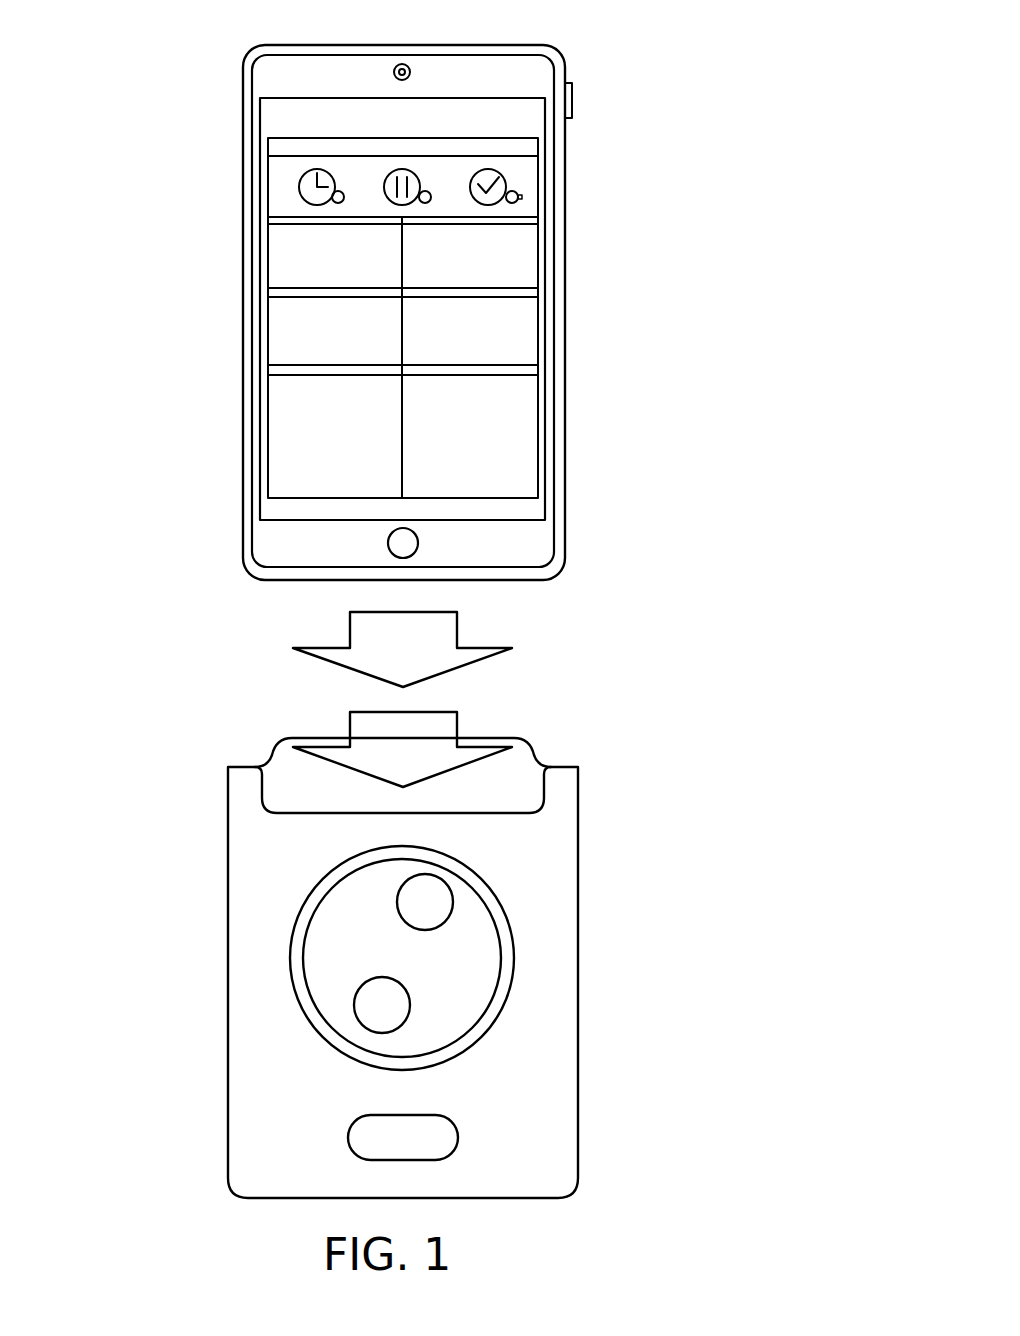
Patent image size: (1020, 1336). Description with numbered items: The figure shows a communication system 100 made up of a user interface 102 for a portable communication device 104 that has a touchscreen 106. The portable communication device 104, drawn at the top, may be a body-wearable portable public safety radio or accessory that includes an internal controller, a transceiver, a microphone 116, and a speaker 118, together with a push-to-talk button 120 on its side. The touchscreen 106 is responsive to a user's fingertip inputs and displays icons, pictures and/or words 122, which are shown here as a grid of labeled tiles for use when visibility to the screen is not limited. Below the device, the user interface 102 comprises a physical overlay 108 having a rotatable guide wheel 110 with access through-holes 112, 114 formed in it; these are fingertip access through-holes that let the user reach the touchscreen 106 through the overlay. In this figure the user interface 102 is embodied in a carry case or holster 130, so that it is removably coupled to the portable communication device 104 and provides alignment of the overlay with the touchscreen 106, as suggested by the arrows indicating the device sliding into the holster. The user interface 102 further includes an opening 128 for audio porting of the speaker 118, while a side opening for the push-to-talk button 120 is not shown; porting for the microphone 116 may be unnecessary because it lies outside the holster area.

The communication system 100 is at (110, 28).
The user interface 102 is at (543, 965).
The portable communication device 104 is at (587, 545).
The touchscreen 106 is at (517, 443).
The physical overlay 108 is at (565, 1060).
The rotatable guide wheel 110 is at (515, 958).
The access through-hole 112 is at (353, 1018).
The access through-hole 114 is at (447, 880).
The microphone 116 is at (410, 72).
The speaker 118 is at (388, 543).
The push-to-talk (PTT) button 120 is at (572, 100).
The icons, pictures and/or words 122 is at (280, 258).
The opening 128 is at (348, 1138).
The carry case or holster 130 is at (283, 770).